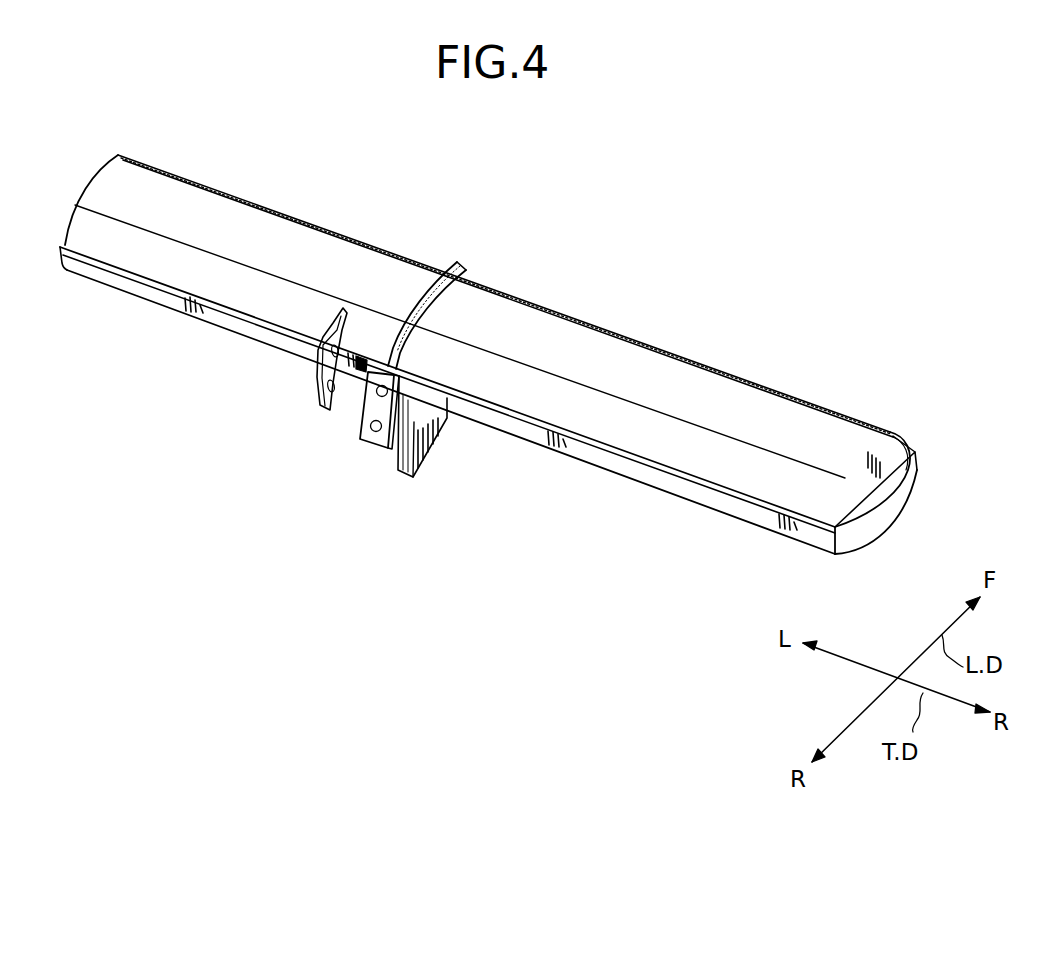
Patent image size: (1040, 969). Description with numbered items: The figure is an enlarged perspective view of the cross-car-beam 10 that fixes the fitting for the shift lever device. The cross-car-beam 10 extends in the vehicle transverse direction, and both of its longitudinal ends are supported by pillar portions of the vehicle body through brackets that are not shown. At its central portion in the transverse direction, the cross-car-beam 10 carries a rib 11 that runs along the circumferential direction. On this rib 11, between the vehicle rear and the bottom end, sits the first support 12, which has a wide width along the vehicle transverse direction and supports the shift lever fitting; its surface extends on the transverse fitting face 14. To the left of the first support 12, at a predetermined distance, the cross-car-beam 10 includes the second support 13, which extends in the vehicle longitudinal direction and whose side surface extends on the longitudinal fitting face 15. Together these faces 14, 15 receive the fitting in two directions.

The cross-car-beam 10 is at (599, 222).
The rib 11 is at (453, 262).
The first support 12 is at (358, 440).
The second support 13 is at (314, 398).
The transverse fitting face 14 is at (383, 442).
The longitudinal fitting face 15 is at (318, 383).